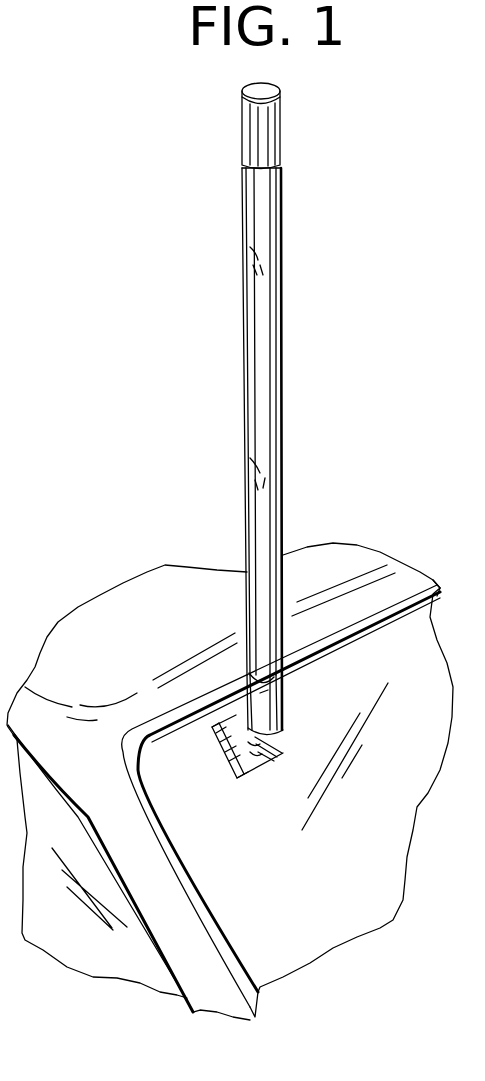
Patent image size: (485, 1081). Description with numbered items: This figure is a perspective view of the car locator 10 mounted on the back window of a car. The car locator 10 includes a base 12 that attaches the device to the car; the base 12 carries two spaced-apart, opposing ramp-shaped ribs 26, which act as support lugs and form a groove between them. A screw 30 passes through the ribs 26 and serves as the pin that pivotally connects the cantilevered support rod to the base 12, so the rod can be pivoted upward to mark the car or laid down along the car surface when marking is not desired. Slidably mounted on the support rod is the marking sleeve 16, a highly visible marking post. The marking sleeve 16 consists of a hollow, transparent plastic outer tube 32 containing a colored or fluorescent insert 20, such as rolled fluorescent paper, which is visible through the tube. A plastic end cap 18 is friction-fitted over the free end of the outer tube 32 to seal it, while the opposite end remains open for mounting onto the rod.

The car locator 10 is at (296, 240).
The base 12 is at (268, 772).
The marking sleeve 16 is at (243, 432).
The end cap 18 is at (242, 131).
The insert 20 is at (255, 378).
The ramp-shaped ribs 26 is at (213, 729).
The screw 30 is at (225, 762).
The outer tube 32 is at (283, 457).